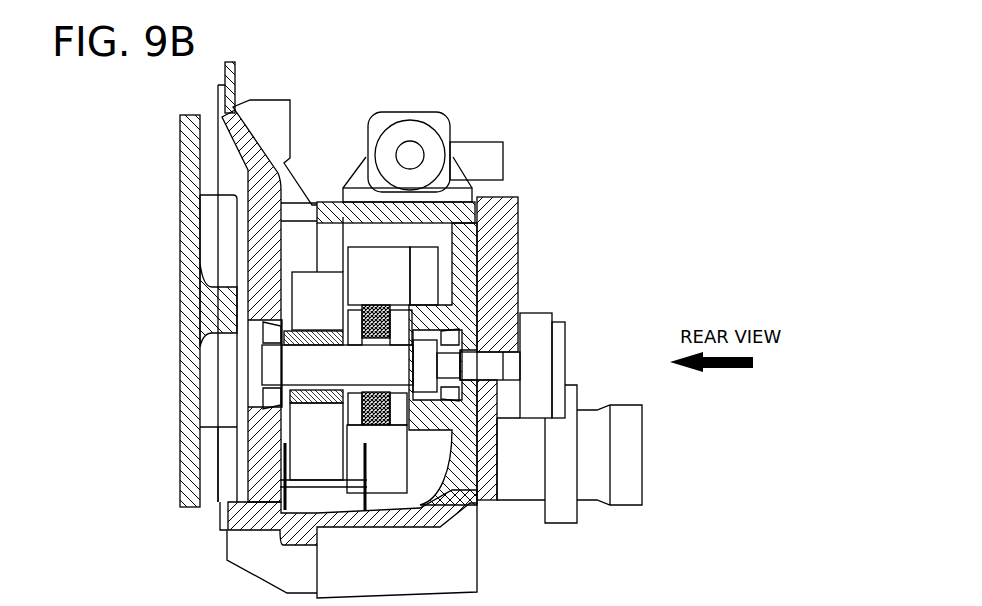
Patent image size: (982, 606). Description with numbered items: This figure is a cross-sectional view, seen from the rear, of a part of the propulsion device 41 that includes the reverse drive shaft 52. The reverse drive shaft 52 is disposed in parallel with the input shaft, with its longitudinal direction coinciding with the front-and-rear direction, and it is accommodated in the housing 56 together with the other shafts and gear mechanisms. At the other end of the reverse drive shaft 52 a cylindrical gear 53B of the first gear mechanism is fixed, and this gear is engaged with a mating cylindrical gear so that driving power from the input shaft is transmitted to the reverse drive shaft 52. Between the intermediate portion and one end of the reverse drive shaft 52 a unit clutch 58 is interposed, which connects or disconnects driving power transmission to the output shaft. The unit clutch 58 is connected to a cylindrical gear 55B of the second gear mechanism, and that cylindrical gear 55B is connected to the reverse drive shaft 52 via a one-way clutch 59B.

The propulsion device 41 is at (589, 102).
The reverse drive shaft 52 is at (327, 387).
The cylindrical gear 53B is at (492, 297).
The cylindrical gear 55B is at (338, 330).
The housing 56 is at (507, 197).
The unit clutch 58 is at (378, 303).
The one-way clutch 59B is at (337, 343).